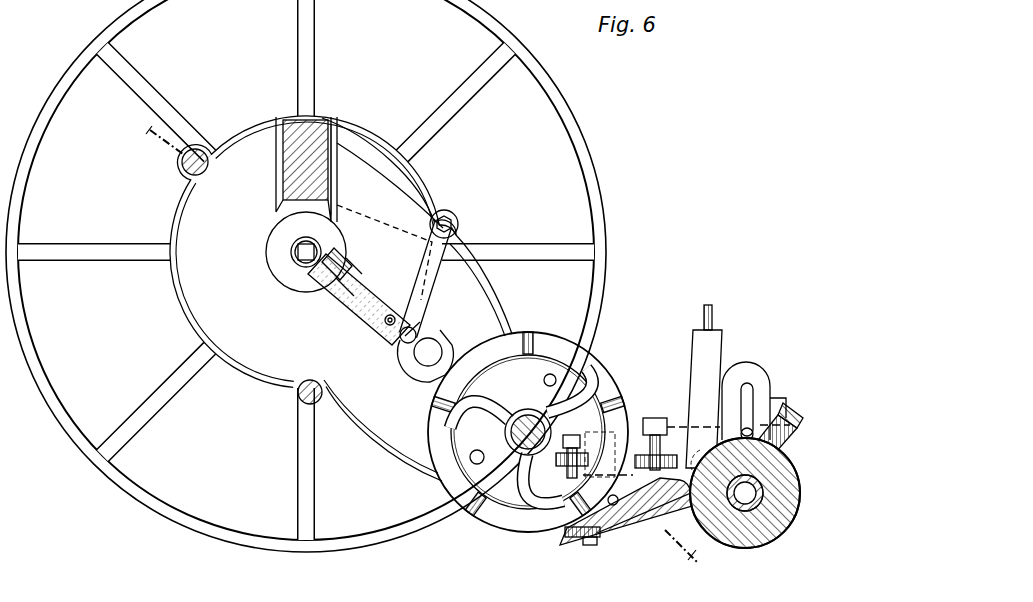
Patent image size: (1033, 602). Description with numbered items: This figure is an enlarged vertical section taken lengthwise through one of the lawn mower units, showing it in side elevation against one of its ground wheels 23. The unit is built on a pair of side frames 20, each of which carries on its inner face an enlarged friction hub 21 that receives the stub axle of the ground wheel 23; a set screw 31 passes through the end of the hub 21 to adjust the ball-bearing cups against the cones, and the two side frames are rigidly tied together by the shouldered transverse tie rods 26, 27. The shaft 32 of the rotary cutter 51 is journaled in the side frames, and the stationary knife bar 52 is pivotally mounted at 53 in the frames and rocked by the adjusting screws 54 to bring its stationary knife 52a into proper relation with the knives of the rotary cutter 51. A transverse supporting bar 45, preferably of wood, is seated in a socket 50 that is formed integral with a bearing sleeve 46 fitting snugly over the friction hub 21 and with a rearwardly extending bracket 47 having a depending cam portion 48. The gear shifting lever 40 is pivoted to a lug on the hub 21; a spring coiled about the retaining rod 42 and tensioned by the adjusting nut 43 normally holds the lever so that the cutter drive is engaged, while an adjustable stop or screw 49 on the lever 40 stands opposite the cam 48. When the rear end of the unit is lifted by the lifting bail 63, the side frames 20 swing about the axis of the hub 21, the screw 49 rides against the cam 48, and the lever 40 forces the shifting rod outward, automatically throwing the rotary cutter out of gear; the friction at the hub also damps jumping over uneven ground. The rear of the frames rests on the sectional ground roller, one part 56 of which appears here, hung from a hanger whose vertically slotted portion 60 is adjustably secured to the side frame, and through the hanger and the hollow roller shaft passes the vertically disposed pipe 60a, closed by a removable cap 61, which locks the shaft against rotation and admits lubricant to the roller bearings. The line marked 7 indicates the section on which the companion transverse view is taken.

The section line 7- 7 is at (416, 353).
The side frame 20 is at (245, 348).
The friction hub 21 is at (291, 256).
The ground wheel 23 is at (571, 113).
The transverse tie rod 26 is at (184, 165).
The transverse tie rod 27 is at (300, 401).
The set screw 31 is at (296, 264).
The shaft of the rotary cutter 32 is at (523, 448).
The gear shifting lever 40 is at (350, 302).
The retaining rod 42 is at (404, 341).
The adjusting nut 43 is at (386, 323).
The transverse supporting bar 45 is at (322, 124).
The bearing sleeve 46 is at (266, 250).
The rearwardly extending bracket 47 is at (396, 207).
The depending cam portion 48 is at (425, 303).
The adjustable stop or screw 49 is at (408, 370).
The socket 50 is at (339, 143).
The rotary cutter 51 is at (573, 368).
The stationary knife bar 52 is at (622, 510).
The stationary knife 52a is at (576, 538).
The pivot of the knife bar 53 is at (612, 507).
The adjusting screw 54 is at (656, 418).
The ground roller part 56 is at (752, 538).
The slotted portion of the hanger 60 is at (746, 368).
The vertically disposed pipe 60a is at (788, 441).
The removable cap or closure 61 is at (795, 402).
The lifting bail 63 is at (708, 355).